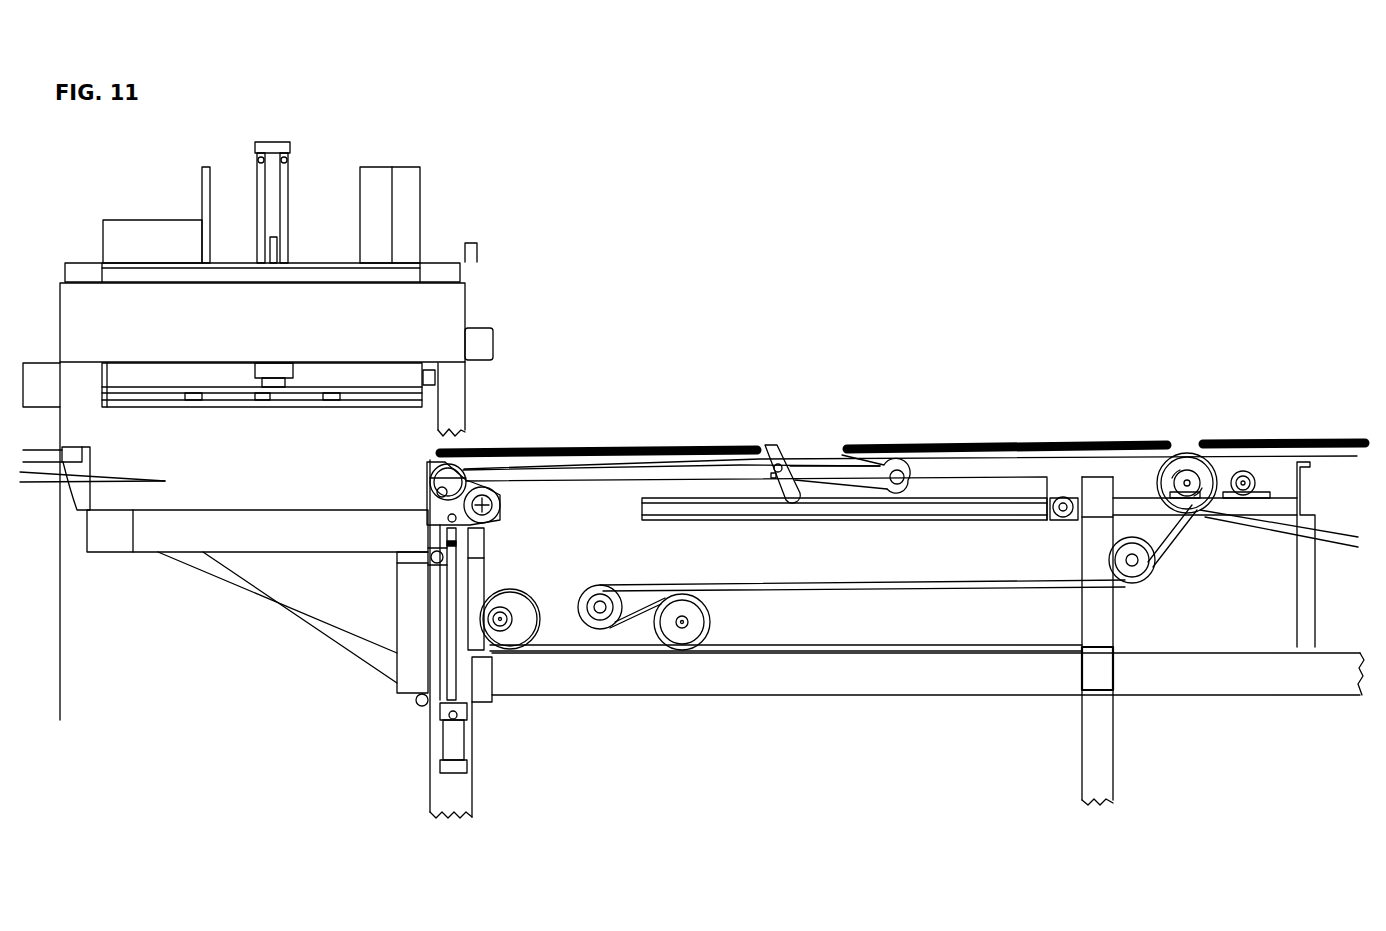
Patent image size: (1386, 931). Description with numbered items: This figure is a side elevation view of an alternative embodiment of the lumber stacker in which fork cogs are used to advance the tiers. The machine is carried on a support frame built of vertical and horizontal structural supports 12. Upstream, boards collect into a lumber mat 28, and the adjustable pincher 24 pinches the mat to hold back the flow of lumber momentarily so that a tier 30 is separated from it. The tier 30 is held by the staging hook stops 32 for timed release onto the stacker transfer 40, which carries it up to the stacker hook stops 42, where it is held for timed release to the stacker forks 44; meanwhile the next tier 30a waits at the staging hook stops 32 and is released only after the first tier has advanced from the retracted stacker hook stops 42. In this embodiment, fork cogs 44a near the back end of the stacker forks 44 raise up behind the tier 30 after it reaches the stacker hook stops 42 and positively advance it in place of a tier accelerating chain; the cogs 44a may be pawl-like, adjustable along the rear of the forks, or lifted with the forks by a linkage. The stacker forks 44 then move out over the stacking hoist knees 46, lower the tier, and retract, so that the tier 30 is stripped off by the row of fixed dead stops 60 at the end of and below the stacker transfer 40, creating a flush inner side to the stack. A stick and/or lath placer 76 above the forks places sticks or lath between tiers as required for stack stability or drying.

The structural supports 12 is at (763, 678).
The adjustable pincher 24 is at (1200, 440).
The lumber mat 28 is at (1258, 440).
The tier 30 is at (572, 447).
The next tier 30a is at (990, 445).
The staging hook stops 32 is at (847, 442).
The stacker transfer 40 is at (807, 455).
The stacker hook stops 42 is at (440, 452).
The stacker forks 44 is at (827, 467).
The fork cogs 44a is at (766, 443).
The stacking hoist knees 46 is at (228, 531).
The fixed dead stops 60 is at (423, 460).
The stick and/or lath placer 76 is at (387, 315).